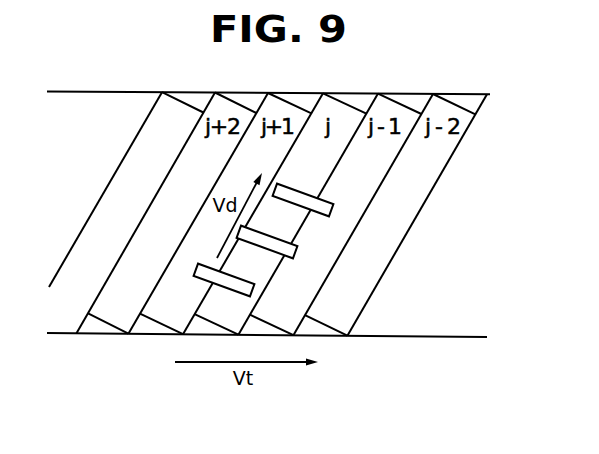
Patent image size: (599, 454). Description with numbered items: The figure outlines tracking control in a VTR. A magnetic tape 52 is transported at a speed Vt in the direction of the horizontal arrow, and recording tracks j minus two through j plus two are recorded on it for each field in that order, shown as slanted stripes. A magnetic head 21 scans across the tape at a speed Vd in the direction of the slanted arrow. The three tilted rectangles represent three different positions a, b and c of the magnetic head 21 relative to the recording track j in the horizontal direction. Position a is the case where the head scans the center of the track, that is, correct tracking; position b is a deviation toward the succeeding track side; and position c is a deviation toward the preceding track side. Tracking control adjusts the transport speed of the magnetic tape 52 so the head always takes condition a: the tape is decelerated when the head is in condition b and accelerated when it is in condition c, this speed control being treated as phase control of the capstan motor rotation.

The magnetic tape 52 is at (107, 334).
The magnetic head 21 is at (271, 252).
The correct tracking position a is at (275, 242).
The succeeding-track deviation position b is at (268, 253).
The preceding-track deviation position c is at (310, 200).